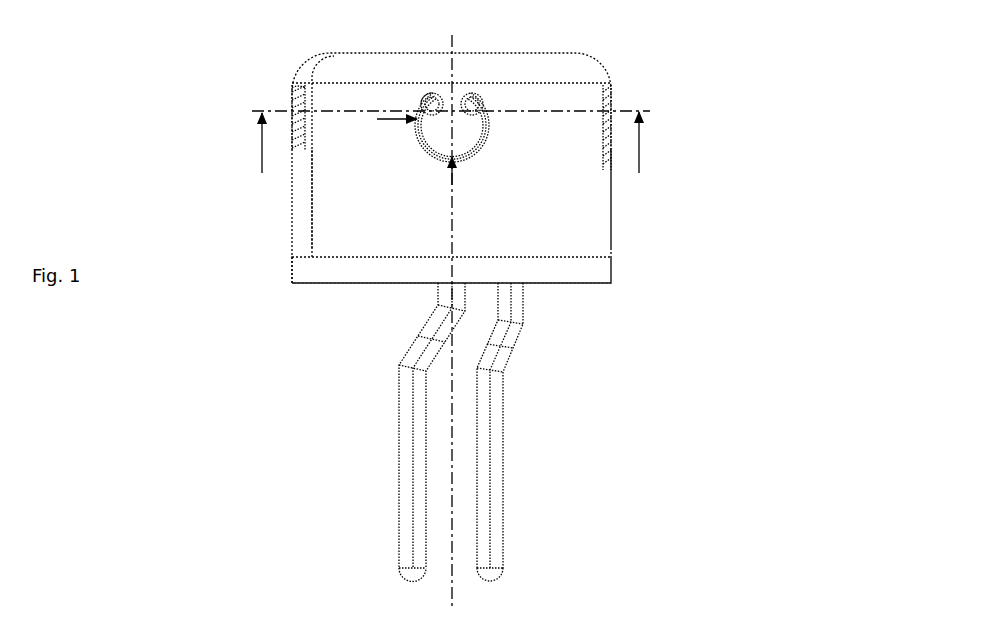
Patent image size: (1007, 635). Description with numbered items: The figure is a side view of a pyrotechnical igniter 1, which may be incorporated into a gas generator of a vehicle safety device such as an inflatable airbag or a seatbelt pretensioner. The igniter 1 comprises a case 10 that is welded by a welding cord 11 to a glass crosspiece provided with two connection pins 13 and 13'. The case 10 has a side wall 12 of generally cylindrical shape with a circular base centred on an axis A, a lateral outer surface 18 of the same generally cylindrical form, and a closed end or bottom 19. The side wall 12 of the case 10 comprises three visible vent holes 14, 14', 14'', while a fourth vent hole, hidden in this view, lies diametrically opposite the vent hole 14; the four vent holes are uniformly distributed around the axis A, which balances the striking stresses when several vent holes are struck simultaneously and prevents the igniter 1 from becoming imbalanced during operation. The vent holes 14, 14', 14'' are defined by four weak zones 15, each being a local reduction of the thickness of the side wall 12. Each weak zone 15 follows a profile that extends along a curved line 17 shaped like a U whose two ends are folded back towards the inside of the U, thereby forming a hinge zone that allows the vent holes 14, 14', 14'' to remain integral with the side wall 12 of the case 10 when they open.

The pyrotechnical igniter 1 is at (517, 312).
The case 10 is at (657, 200).
The welding cord 11 is at (506, 251).
The side wall 12 is at (284, 200).
The connection pin 13 is at (378, 432).
The connection pin 13' is at (550, 432).
The vent hole 14 is at (502, 127).
The vent hole 14' is at (660, 113).
The vent hole 14'' is at (238, 108).
The weak zone 15 is at (518, 142).
The curved line 17 is at (474, 85).
The lateral outer surface 18 is at (415, 140).
The bottom 19 is at (470, 149).